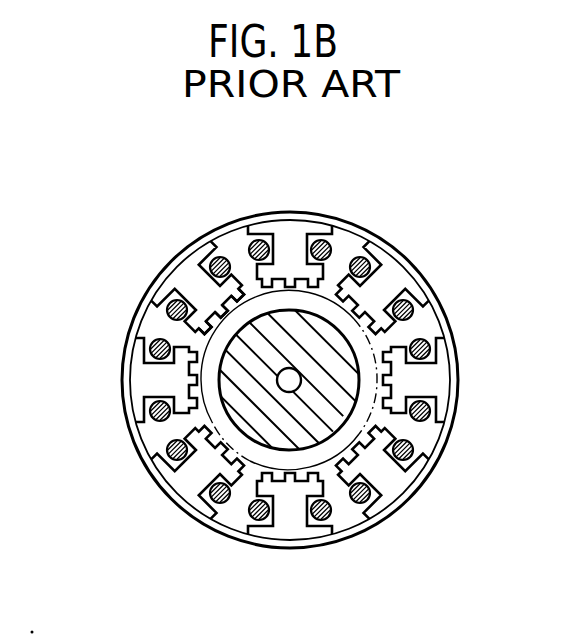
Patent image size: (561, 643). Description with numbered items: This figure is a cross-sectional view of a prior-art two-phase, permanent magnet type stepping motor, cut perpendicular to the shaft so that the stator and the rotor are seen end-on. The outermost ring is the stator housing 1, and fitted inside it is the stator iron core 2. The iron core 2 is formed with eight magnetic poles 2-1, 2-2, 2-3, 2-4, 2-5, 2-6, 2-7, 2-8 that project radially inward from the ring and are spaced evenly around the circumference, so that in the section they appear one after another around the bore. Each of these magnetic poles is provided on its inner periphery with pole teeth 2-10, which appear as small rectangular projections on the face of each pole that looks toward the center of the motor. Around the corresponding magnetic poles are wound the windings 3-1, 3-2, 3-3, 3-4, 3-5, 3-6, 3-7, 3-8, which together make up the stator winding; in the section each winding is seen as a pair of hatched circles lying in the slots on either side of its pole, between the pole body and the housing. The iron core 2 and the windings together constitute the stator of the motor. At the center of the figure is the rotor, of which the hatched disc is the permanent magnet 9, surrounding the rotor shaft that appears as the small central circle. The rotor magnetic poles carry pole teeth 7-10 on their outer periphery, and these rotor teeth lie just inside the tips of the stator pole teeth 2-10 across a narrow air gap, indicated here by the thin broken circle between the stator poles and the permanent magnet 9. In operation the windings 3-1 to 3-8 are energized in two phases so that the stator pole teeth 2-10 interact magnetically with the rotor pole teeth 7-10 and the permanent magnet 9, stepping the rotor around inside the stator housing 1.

The stator housing 1 is at (313, 213).
The stator iron core 2 is at (247, 224).
The magnetic pole 2-1 is at (288, 247).
The magnetic pole 2-2 is at (378, 283).
The magnetic pole 2-3 is at (415, 380).
The magnetic pole 2-4 is at (380, 472).
The magnetic pole 2-5 is at (293, 513).
The magnetic pole 2-6 is at (190, 480).
The magnetic pole 2-7 is at (158, 382).
The magnetic pole 2-8 is at (175, 262).
The pole teeth 2-10 is at (360, 256).
The winding 3-1 is at (326, 243).
The winding 3-2 is at (407, 309).
The winding 3-3 is at (424, 412).
The winding 3-4 is at (365, 501).
The winding 3-5 is at (256, 519).
The winding 3-6 is at (175, 456).
The winding 3-7 is at (152, 346).
The winding 3-8 is at (193, 292).
The pole teeth 7-10 is at (147, 302).
The permanent magnet 9 is at (343, 352).